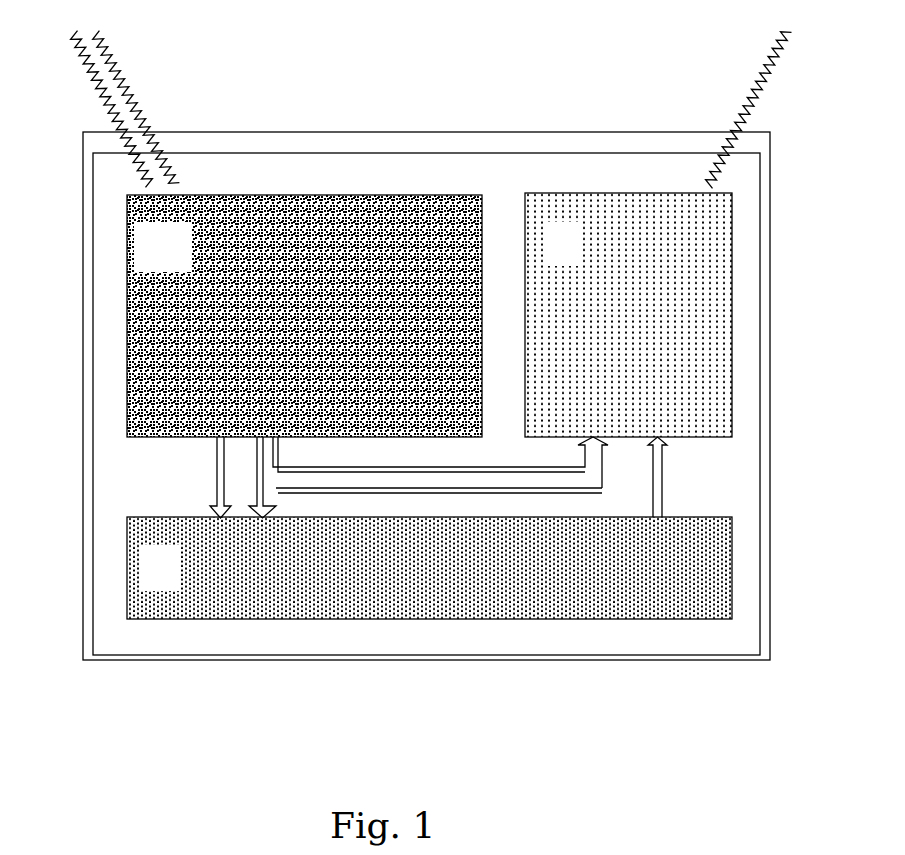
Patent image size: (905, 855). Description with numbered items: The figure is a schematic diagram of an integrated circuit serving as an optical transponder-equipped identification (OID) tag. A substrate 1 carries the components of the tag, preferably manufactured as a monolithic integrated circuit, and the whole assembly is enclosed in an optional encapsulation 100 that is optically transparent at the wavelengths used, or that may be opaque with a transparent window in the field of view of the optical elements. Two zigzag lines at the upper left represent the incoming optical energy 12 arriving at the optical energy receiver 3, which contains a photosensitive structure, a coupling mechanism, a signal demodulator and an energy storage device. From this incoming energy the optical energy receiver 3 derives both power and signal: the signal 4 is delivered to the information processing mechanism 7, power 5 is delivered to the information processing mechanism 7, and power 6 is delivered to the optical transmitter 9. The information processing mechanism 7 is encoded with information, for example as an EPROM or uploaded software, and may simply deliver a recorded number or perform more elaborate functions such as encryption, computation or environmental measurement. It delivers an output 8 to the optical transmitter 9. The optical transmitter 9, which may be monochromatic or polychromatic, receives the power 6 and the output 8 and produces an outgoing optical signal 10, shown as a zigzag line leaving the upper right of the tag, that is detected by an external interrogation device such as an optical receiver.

The encapsulation 100 is at (402, 668).
The substrate 1 is at (565, 632).
The antenna 12 is at (147, 103).
The outgoing optical signal 10 is at (738, 103).
The optical energy receiver 3 is at (304, 316).
The optical transmitter 9 is at (628, 315).
The information processing mechanism 7 is at (429, 568).
The signal 4 is at (209, 496).
The power 5 is at (425, 477).
The power 6 is at (440, 462).
The output 8 is at (668, 493).